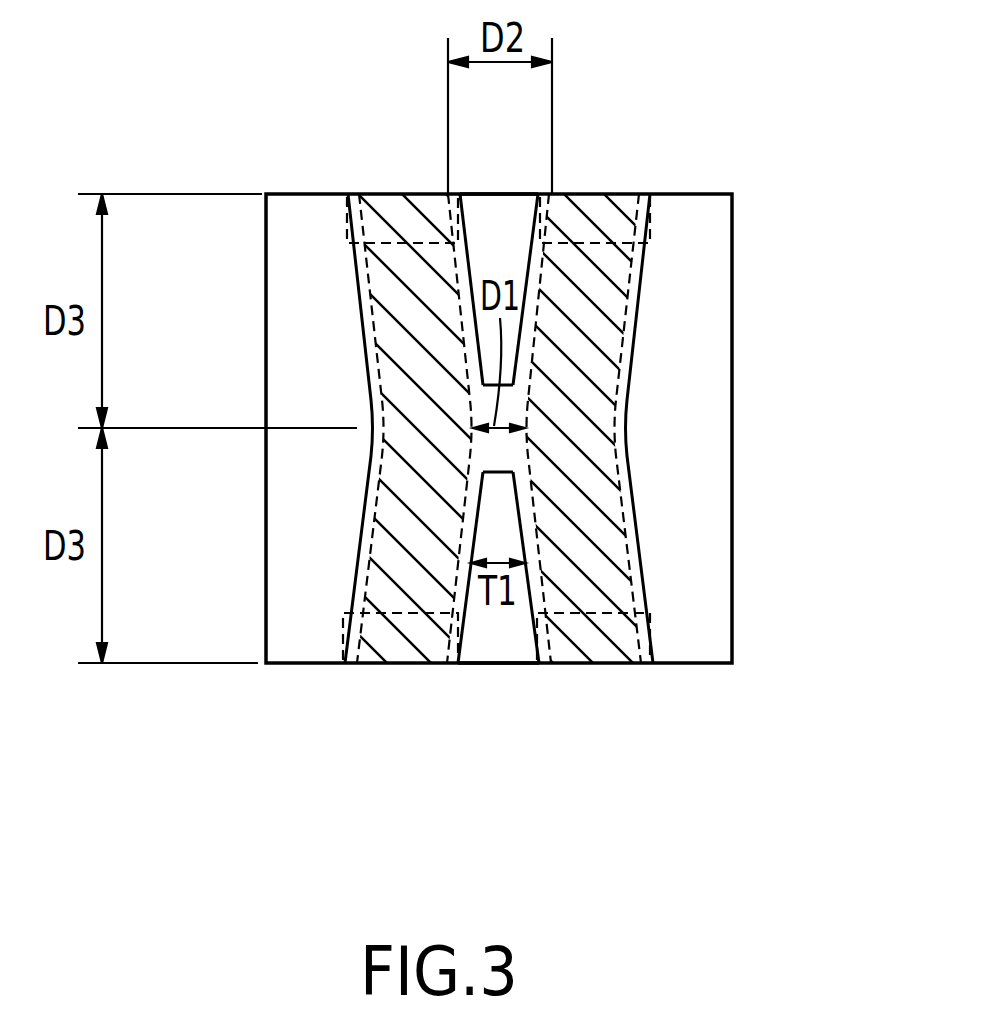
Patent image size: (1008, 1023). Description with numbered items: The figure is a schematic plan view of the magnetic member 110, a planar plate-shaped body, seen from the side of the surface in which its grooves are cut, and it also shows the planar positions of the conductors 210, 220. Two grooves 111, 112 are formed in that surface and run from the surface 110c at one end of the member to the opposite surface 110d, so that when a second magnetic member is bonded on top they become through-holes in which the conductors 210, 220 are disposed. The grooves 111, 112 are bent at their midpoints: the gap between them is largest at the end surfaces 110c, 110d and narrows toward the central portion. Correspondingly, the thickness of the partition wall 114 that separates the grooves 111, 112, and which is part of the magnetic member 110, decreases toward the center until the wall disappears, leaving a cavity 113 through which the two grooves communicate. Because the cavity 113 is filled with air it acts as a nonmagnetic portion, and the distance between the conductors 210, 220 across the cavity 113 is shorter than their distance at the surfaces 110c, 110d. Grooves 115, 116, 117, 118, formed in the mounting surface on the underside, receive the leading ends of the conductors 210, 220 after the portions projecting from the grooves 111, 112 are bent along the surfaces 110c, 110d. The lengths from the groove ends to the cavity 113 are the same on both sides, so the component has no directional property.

The magnetic member 110 is at (732, 339).
The surface 110c is at (512, 663).
The surface 110d is at (492, 194).
The groove 111 is at (375, 537).
The groove 112 is at (623, 573).
The cavity 113 is at (508, 443).
The partition wall 114 is at (512, 217).
The groove 115 is at (403, 642).
The groove 116 is at (610, 647).
The groove 117 is at (412, 215).
The groove 118 is at (605, 220).
The conductor 210 is at (372, 322).
The conductor 220 is at (620, 297).